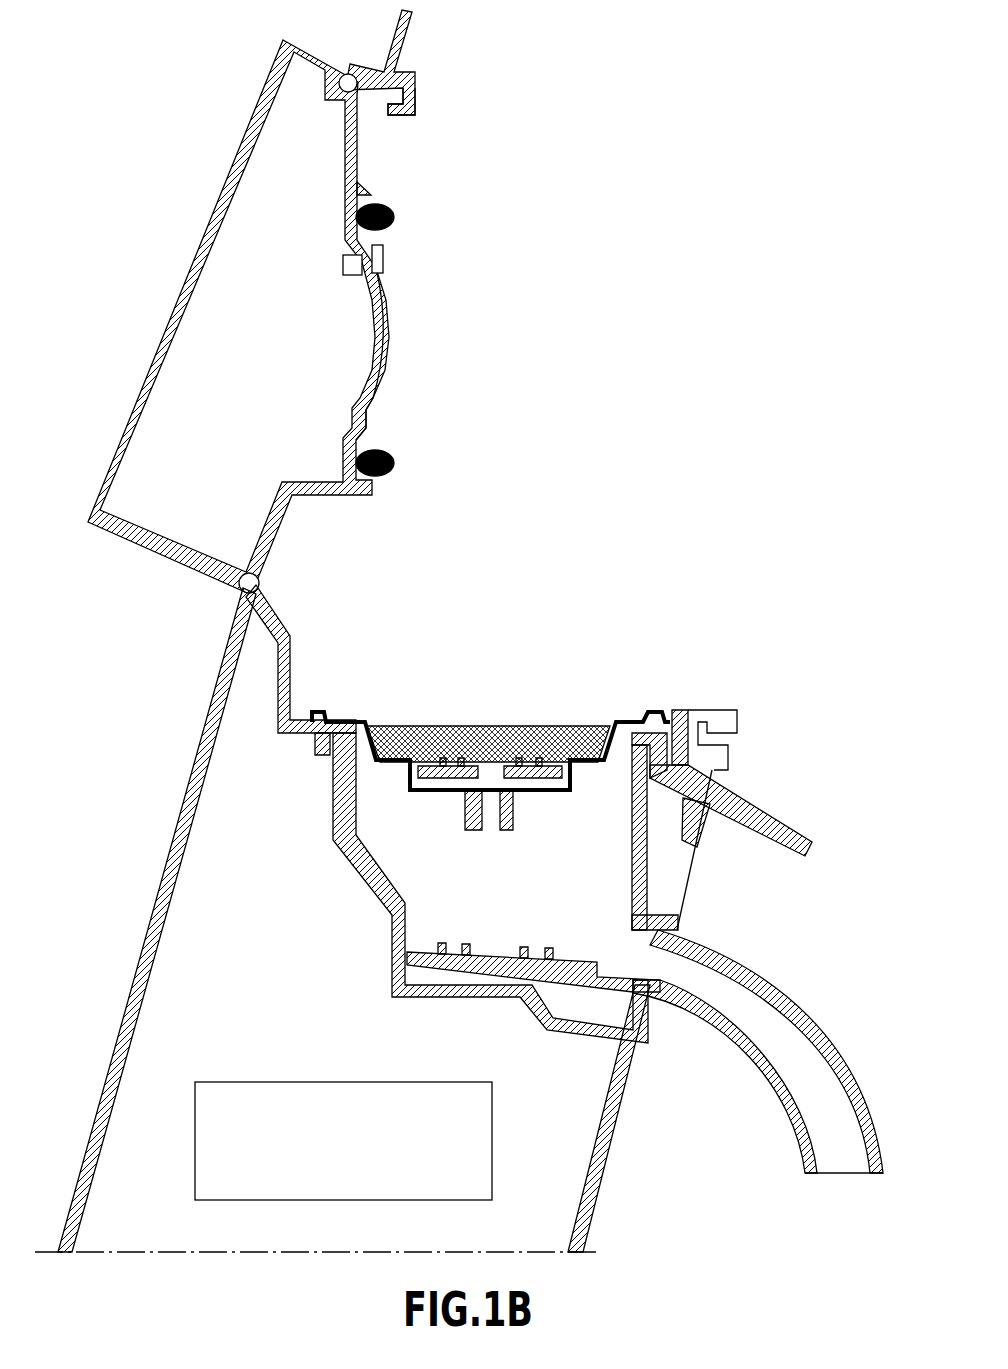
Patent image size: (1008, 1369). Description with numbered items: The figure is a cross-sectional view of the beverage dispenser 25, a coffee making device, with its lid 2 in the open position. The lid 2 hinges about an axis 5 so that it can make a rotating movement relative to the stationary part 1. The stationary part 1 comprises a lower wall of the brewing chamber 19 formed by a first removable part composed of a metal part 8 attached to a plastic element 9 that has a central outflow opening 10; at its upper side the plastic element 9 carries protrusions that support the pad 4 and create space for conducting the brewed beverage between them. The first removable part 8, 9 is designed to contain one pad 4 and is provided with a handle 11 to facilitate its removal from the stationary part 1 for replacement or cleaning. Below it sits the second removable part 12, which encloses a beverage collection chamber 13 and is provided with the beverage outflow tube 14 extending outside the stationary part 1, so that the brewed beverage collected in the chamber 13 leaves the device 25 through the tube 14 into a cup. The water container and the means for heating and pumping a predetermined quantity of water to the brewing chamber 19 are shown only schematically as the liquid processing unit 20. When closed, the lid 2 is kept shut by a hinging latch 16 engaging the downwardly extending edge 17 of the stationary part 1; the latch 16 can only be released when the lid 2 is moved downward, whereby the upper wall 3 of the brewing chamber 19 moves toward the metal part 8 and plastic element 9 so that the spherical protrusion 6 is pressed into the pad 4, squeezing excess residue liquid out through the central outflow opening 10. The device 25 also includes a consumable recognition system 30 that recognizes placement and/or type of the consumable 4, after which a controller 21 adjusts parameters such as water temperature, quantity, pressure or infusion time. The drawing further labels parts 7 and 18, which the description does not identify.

The stationary part 1 is at (115, 1010).
The lid 2 is at (190, 265).
The upper wall 3 is at (372, 413).
The consumable 4 is at (495, 722).
The axis 5 is at (239, 588).
The spherical protrusion 6 is at (390, 340).
The seal 7 is at (396, 215).
The metal part 8 is at (350, 720).
The plastic element 9 is at (435, 795).
The central outflow opening 10 is at (490, 815).
The handle 11 is at (815, 843).
The second removable part 12 is at (505, 952).
The beverage collection chamber 13 is at (617, 862).
The beverage outflow tube 14 is at (806, 1062).
The hinging latch 16 is at (416, 102).
The downwardly extending edge 17 is at (740, 718).
The handle 18 is at (412, 22).
The brewing chamber 19 is at (378, 744).
The liquid processing unit 20 is at (252, 1082).
The controller 21 is at (343, 265).
The beverage dispenser 25 is at (700, 104).
The consumable recognition system 30 is at (385, 262).